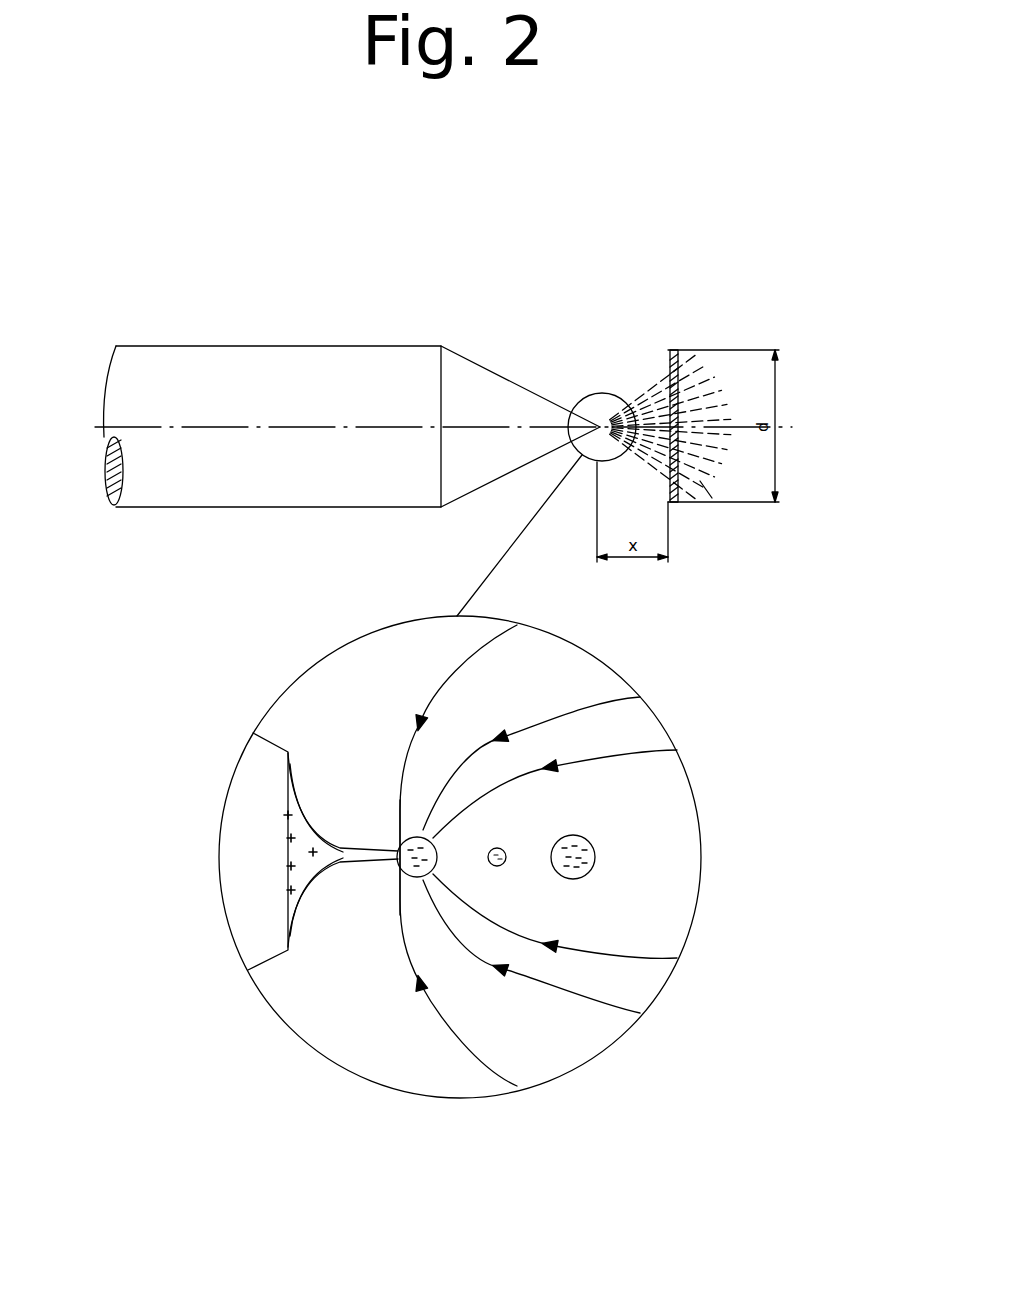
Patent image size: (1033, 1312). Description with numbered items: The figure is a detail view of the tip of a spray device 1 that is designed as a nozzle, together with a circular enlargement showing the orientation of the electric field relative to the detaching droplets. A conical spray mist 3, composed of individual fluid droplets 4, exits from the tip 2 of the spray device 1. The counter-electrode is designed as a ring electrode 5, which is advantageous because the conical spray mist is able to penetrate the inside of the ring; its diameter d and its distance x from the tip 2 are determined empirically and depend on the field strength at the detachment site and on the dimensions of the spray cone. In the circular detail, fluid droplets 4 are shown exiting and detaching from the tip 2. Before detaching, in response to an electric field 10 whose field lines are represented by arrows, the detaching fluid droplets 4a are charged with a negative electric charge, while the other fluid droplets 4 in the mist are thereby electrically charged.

The spray device 1 is at (180, 481).
The tip 2 is at (582, 410).
The conical spray mist 3 is at (643, 385).
The fluid droplets 4 is at (707, 490).
The detaching fluid droplets 4a is at (402, 870).
The ring electrode 5 is at (675, 348).
The electric field 10 is at (562, 1003).